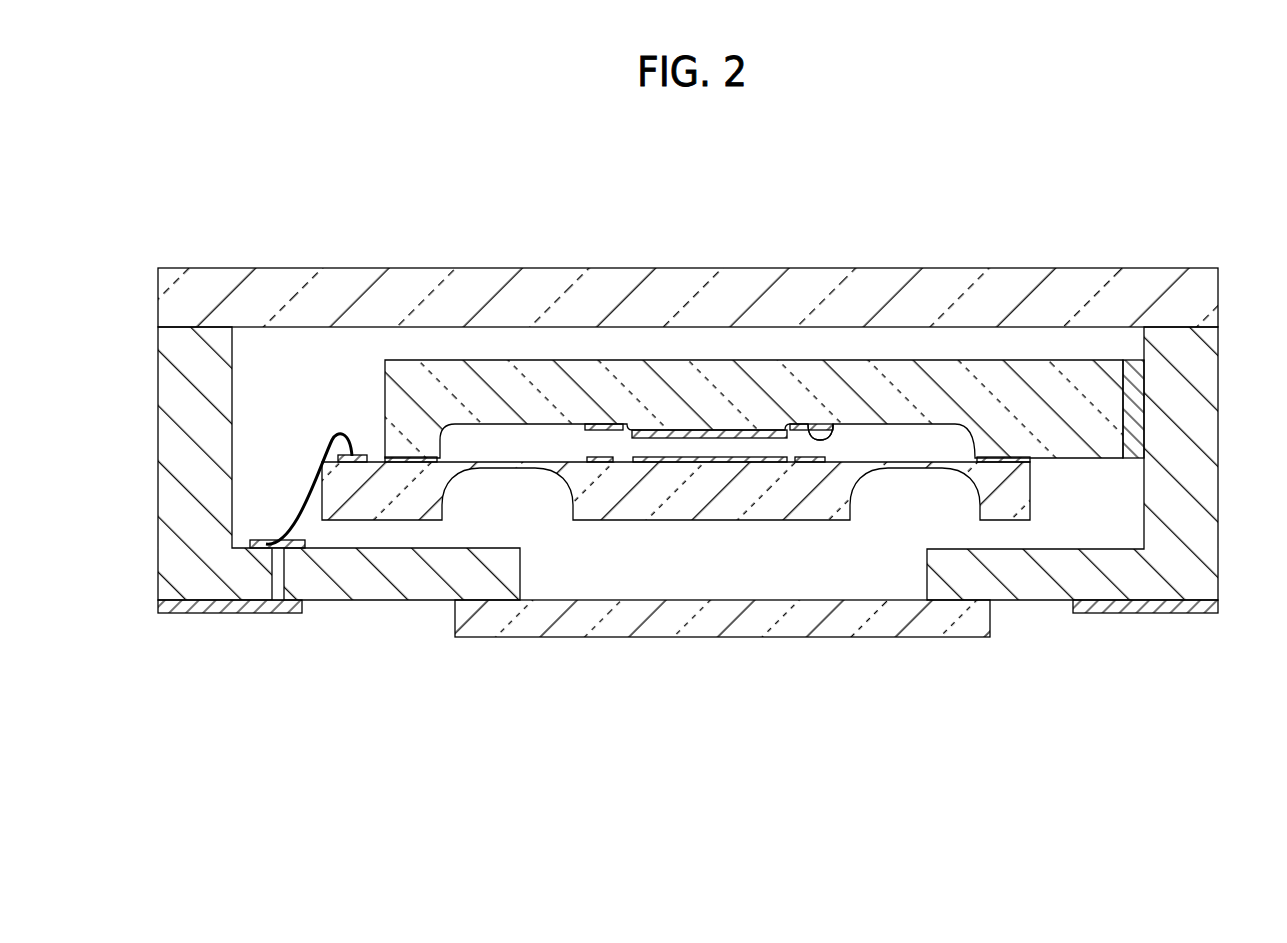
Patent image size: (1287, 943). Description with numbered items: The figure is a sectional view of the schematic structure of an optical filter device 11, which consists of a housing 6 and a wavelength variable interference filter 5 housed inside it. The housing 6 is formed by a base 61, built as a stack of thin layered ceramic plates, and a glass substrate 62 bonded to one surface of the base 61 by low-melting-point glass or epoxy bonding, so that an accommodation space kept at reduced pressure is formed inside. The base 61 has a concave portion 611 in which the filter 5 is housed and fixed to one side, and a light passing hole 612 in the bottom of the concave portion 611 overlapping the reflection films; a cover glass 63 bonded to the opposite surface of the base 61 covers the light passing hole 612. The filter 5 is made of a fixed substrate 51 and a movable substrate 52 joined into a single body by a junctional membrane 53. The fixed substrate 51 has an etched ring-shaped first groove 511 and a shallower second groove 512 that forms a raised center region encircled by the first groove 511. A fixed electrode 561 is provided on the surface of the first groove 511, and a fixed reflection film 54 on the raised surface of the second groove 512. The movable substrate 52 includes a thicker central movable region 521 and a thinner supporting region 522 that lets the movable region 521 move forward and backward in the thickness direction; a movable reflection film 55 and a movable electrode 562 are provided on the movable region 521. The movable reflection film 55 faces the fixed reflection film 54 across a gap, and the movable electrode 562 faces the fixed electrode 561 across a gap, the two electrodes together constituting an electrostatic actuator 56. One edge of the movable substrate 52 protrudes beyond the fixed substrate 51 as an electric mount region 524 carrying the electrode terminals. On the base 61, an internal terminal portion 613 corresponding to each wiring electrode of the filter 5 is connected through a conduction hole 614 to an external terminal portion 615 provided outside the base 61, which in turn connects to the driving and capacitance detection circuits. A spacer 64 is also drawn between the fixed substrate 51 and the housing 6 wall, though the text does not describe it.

The optical filter device 11 is at (1044, 198).
The wavelength variable interference filter 5 is at (366, 340).
The fixed substrate 51 is at (627, 360).
The first groove 511 is at (495, 427).
The second groove 512 is at (622, 440).
The movable substrate 52 is at (378, 522).
The movable region 521 is at (597, 521).
The supporting region 522 is at (498, 469).
The junctional membrane 53 is at (380, 457).
The fixed reflection film 54 is at (742, 430).
The movable reflection film 55 is at (685, 463).
The electrostatic actuator 56 is at (920, 222).
The fixed electrode 561 is at (833, 423).
The movable electrode 562 is at (830, 457).
The electric mount region 524 is at (320, 453).
The housing 6 is at (146, 424).
The base 61 is at (156, 533).
The concave portion 611 is at (1045, 548).
The light passing hole 612 is at (926, 582).
The internal terminal portion 613 is at (265, 540).
The conduction hole 614 is at (275, 600).
The external terminal portion 615 is at (213, 614).
The glass substrate 62 is at (156, 286).
The cover glass 63 is at (828, 638).
The spacer 64 is at (1146, 375).